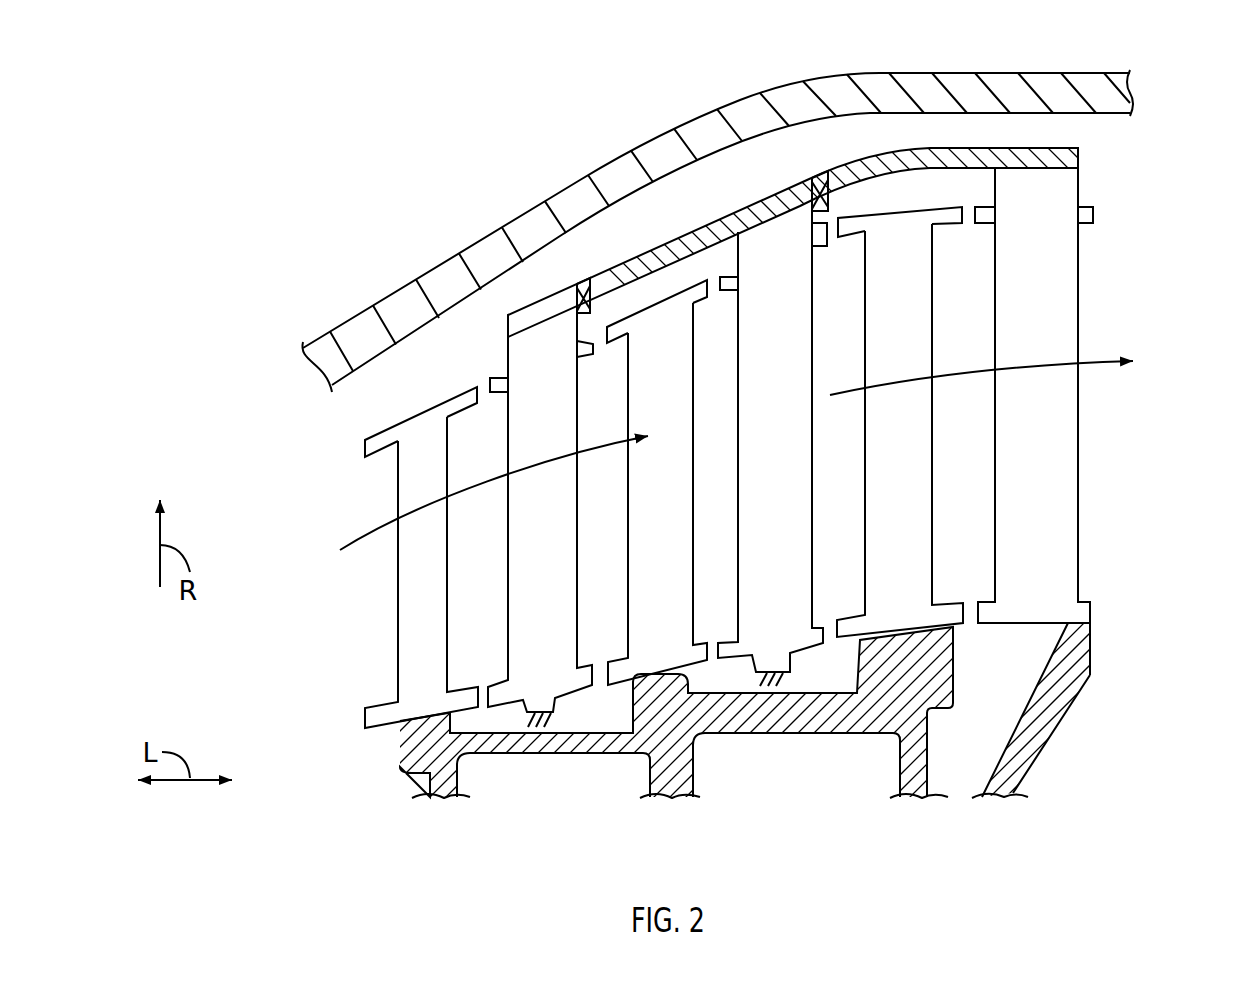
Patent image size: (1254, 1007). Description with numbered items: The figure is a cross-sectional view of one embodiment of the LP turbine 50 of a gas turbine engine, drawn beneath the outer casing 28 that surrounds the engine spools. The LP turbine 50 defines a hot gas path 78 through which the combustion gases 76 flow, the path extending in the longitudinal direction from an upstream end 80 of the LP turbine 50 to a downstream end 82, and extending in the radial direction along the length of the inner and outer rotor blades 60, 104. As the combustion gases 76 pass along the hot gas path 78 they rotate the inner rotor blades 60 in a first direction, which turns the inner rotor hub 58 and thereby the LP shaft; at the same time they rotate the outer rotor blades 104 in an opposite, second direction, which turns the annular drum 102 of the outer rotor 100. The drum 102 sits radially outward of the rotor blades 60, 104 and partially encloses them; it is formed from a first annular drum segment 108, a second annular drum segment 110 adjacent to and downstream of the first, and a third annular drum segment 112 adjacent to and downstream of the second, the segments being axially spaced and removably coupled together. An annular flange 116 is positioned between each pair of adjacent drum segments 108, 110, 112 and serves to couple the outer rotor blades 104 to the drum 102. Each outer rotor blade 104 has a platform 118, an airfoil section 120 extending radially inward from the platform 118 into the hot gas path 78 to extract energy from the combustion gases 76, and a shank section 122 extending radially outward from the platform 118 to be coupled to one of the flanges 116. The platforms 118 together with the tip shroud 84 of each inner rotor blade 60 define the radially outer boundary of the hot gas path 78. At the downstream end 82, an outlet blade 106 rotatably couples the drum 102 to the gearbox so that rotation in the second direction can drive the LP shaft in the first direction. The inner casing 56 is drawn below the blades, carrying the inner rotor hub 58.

The outer casing 28 is at (390, 296).
The LP turbine 50 is at (245, 130).
The inner casing 56 is at (350, 757).
The inner rotor hub 58 is at (790, 735).
The inner rotor blade 60 is at (407, 590).
The combustion gases 76 is at (472, 487).
The hot gas path 78 is at (468, 643).
The upstream end 80 is at (288, 482).
The downstream end 82 is at (1165, 186).
The tip shroud 84 is at (703, 298).
The outer rotor 100 is at (712, 172).
The annular drum 102 is at (590, 233).
The outer rotor blade 104 is at (522, 545).
The outlet blade 106 is at (1017, 425).
The first annular drum segment 108 is at (532, 297).
The second annular drum segment 110 is at (648, 250).
The third annular drum segment 112 is at (877, 147).
The annular flange 116 is at (580, 283).
The platform 118 is at (498, 393).
The airfoil section 120 is at (567, 377).
The shank section 122 is at (736, 248).